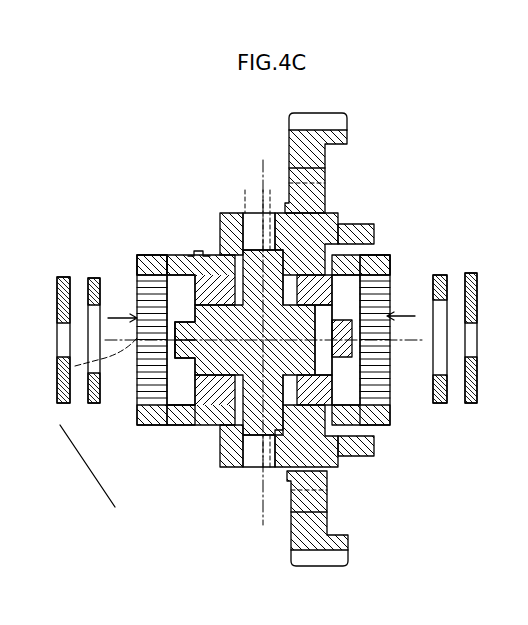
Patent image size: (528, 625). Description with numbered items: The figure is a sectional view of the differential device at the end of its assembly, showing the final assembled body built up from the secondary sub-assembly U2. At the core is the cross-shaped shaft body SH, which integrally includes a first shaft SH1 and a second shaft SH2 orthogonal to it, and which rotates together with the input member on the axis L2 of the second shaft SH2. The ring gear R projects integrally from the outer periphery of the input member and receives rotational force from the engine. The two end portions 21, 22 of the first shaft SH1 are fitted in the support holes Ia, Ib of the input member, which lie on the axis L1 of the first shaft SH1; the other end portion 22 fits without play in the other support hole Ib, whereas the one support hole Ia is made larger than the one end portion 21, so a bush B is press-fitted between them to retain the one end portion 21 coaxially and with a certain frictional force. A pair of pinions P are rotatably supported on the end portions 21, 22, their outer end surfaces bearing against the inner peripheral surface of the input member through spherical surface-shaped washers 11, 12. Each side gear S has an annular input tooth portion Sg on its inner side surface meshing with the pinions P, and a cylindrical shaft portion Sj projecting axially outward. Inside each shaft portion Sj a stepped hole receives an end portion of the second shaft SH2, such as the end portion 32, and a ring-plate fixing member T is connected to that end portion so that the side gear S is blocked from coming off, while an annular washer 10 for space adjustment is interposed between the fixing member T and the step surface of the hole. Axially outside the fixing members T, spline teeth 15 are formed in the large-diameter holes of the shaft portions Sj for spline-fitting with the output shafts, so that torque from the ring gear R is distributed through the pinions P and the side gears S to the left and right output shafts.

The ring gear R is at (288, 147).
The secondary sub-assembly U2 is at (277, 520).
The other end portion of the first shaft 22 is at (258, 210).
The one end portion of the first shaft 21 is at (257, 470).
The input tooth portion Sg is at (345, 236).
The shaft portion Sj is at (152, 268).
The side gear S is at (166, 250).
The spherical surface-shaped washer 11 is at (222, 228).
The spherical surface-shaped washer 12 is at (233, 434).
The spline teeth 15 is at (140, 290).
The bush B is at (238, 468).
The end portion of the second shaft 32 is at (360, 333).
The other support hole Ib is at (263, 208).
The one support hole Ia is at (275, 468).
The axis of the first shaft L1 is at (245, 190).
The axis of the second shaft L2 is at (75, 366).
The pinion P is at (205, 255).
The fixing member T is at (56, 300).
The annular washer 10 is at (95, 278).
The cross-shaped shaft body SH is at (82, 466).
The first shaft SH1 is at (227, 380).
The second shaft SH2 is at (177, 347).